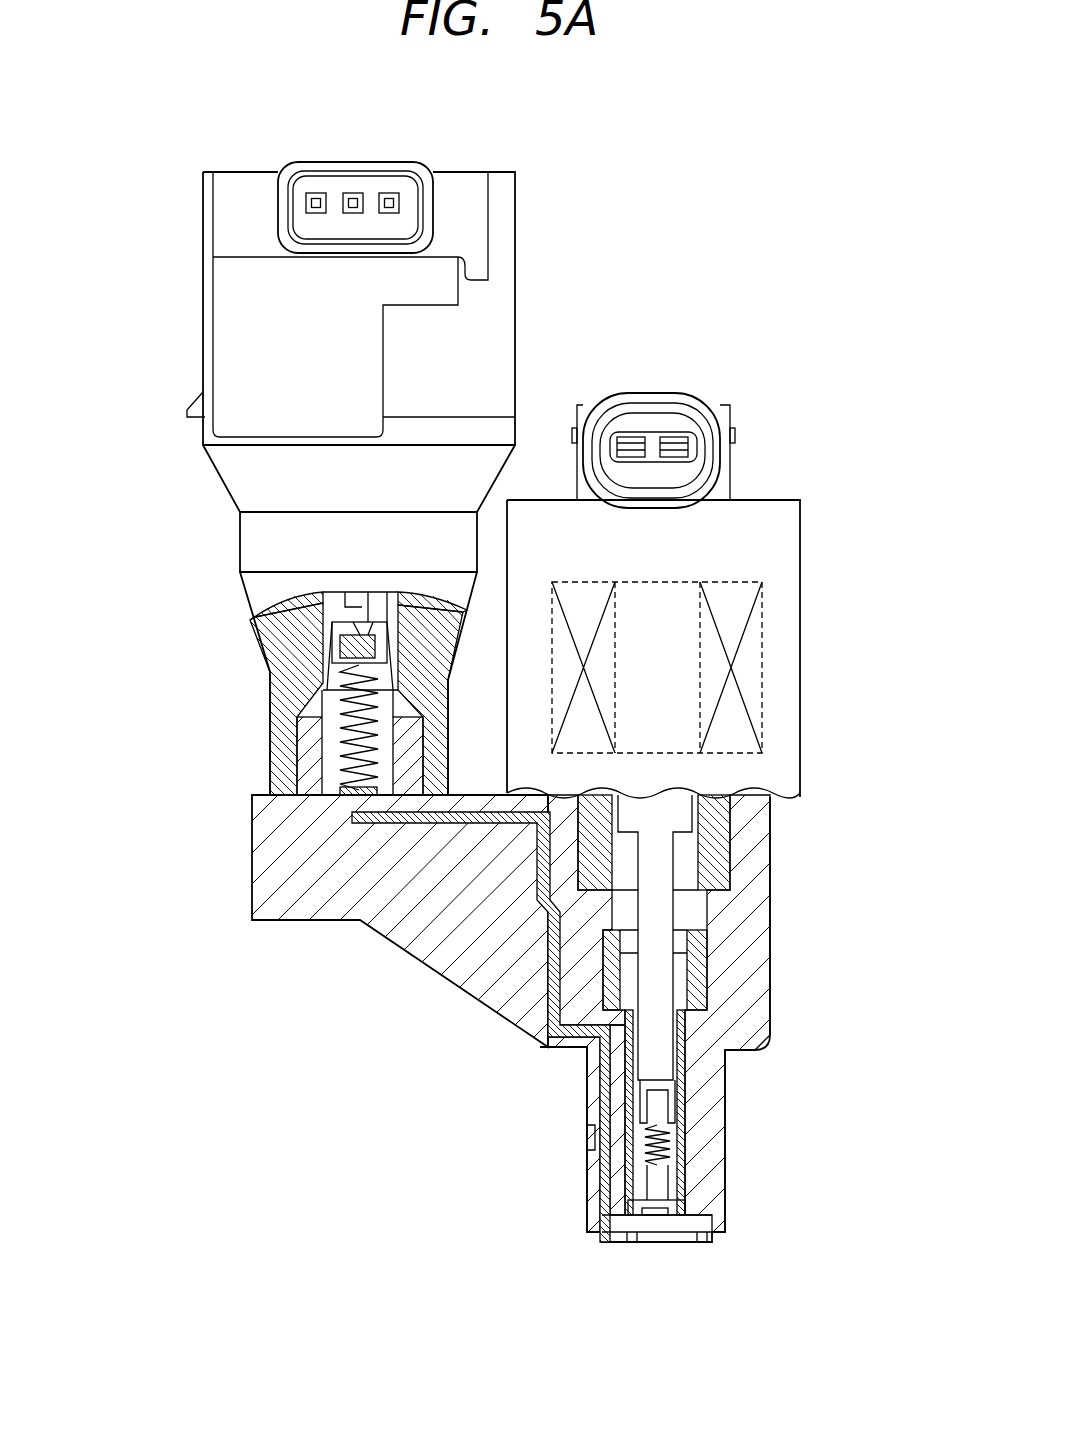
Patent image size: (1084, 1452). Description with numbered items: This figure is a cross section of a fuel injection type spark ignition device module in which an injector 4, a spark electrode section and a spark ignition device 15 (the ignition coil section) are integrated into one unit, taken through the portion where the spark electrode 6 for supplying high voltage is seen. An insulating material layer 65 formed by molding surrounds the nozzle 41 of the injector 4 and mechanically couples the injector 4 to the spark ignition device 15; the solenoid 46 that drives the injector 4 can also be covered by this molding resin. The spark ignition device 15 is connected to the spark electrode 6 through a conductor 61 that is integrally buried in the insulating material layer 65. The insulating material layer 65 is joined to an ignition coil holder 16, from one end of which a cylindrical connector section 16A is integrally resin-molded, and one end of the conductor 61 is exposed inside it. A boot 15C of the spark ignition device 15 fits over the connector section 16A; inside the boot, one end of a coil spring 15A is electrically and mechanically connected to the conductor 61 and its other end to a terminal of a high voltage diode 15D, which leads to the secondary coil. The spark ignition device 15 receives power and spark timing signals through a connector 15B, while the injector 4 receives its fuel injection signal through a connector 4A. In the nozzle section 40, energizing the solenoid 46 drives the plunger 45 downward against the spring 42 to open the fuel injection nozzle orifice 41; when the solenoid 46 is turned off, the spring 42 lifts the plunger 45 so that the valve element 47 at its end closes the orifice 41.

The spark ignition device 15 is at (253, 342).
The connector 15B is at (313, 158).
The high voltage diode 15D is at (253, 618).
The boot 15C is at (287, 655).
The coil spring 15A is at (303, 710).
The connector section 16A is at (310, 767).
The ignition coil holder 16 is at (273, 863).
The injector 4 is at (745, 541).
The connector 4A is at (668, 397).
The solenoid 46 is at (752, 717).
The plunger 45 is at (658, 917).
The nozzle section 40 is at (700, 987).
The conductor 61 is at (557, 950).
The spring 42 is at (660, 1138).
The insulating material layer 65 is at (720, 1200).
The spark electrode 6 is at (603, 1243).
The fuel injection nozzle orifice 41 is at (658, 1200).
The valve element 47 is at (663, 1222).